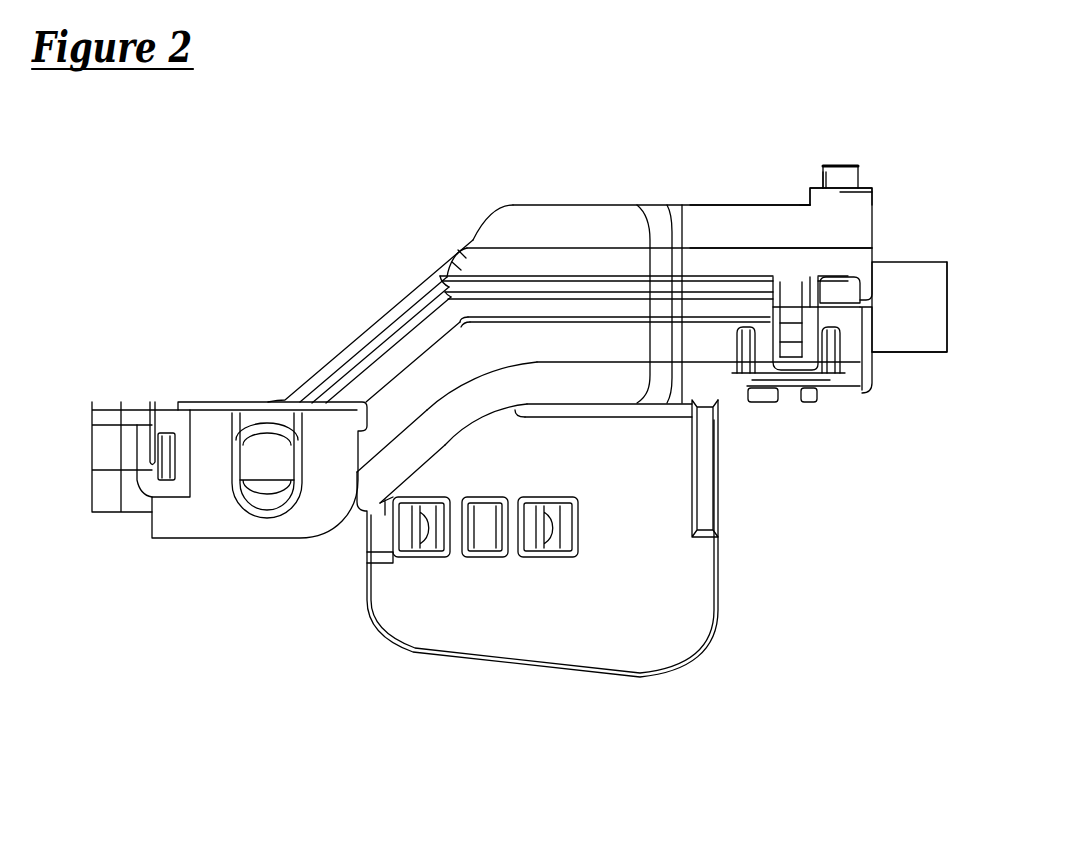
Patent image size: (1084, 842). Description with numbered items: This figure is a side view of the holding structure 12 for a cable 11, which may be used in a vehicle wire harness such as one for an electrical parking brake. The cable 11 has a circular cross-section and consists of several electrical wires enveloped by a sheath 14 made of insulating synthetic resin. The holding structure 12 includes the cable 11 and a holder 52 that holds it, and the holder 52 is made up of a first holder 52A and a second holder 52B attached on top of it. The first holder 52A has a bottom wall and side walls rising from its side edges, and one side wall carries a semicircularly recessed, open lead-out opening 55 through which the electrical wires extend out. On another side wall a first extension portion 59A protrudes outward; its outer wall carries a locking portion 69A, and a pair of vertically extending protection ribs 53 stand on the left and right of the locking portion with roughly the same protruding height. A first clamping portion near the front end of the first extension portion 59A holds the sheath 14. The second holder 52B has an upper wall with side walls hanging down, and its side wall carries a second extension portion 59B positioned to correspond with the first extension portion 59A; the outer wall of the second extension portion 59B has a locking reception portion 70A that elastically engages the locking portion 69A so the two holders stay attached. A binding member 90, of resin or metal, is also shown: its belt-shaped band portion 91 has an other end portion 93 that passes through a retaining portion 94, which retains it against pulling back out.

The cable 11 is at (913, 280).
The holding structure 12 is at (626, 128).
The sheath 14 is at (910, 341).
The holder 52 is at (150, 248).
The first holder 52A is at (222, 525).
The second holder 52B is at (210, 404).
The protection rib 53 is at (740, 373).
The lead-out opening 55 is at (245, 492).
The first extension portion 59A is at (819, 379).
The second extension portion 59B is at (774, 214).
The locking portion 69A is at (788, 350).
The locking reception portion 70A is at (768, 355).
The binding member 90 is at (865, 192).
The band portion 91 is at (823, 173).
The other end portion 93 is at (837, 164).
The retaining portion 94 is at (848, 191).